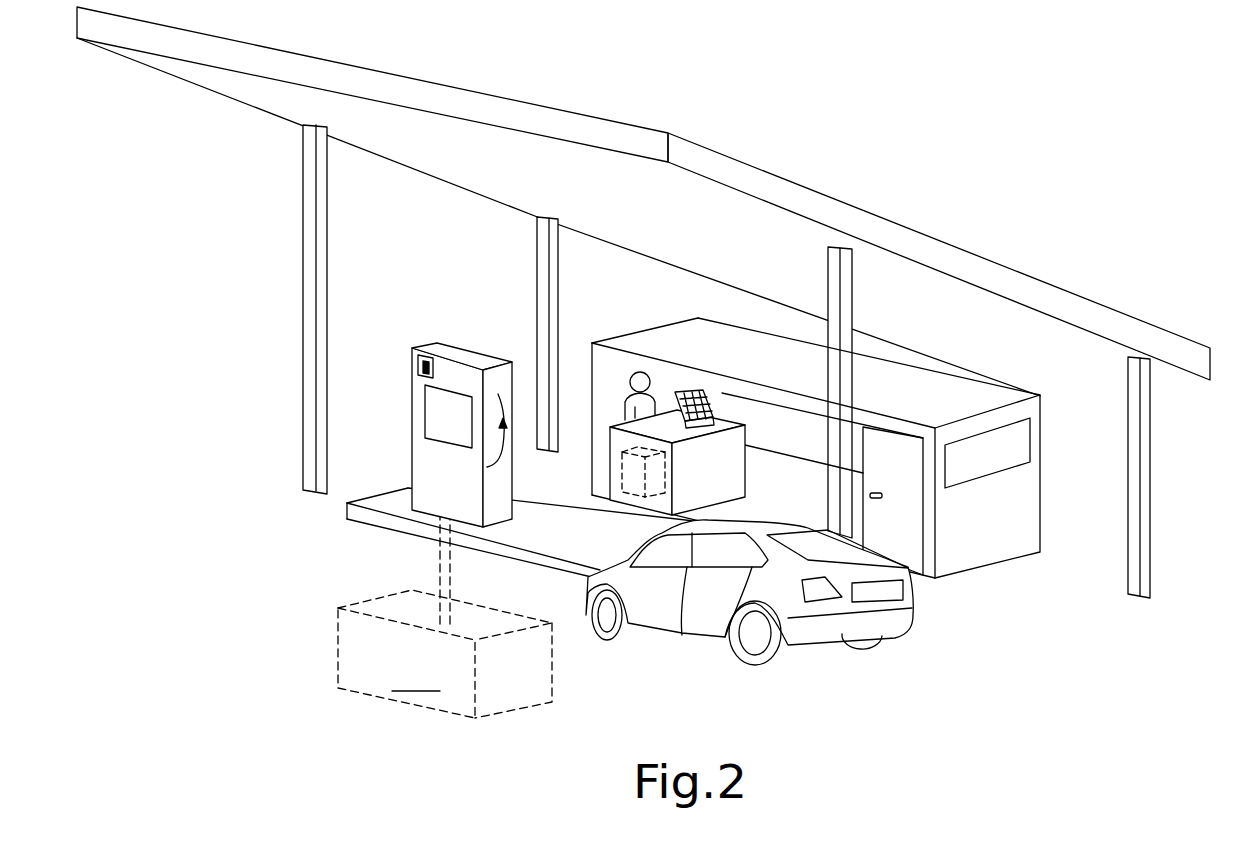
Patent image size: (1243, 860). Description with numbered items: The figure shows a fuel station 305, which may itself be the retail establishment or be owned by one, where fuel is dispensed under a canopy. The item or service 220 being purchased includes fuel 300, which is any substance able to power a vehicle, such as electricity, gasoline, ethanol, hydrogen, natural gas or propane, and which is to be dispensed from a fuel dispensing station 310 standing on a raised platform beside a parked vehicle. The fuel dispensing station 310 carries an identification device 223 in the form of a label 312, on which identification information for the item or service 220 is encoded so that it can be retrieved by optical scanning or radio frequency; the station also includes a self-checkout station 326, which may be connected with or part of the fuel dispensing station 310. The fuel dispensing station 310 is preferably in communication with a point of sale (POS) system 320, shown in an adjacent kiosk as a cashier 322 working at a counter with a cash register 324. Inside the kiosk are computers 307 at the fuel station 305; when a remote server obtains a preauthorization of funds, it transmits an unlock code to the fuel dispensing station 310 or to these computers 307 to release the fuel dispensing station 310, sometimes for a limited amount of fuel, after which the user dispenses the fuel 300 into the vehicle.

The fuel station 305 is at (1092, 160).
The fuel dispensing station 310 is at (433, 404).
The label 312 is at (384, 330).
The identification device 223 is at (382, 348).
The self-checkout station 326 is at (437, 425).
The computers 307 is at (632, 486).
The point of sale (POS) system 320 is at (692, 390).
The cashier 322 is at (641, 372).
The cash register 324 is at (690, 520).
The fuel 300 is at (416, 678).
The item or service 220 is at (445, 614).